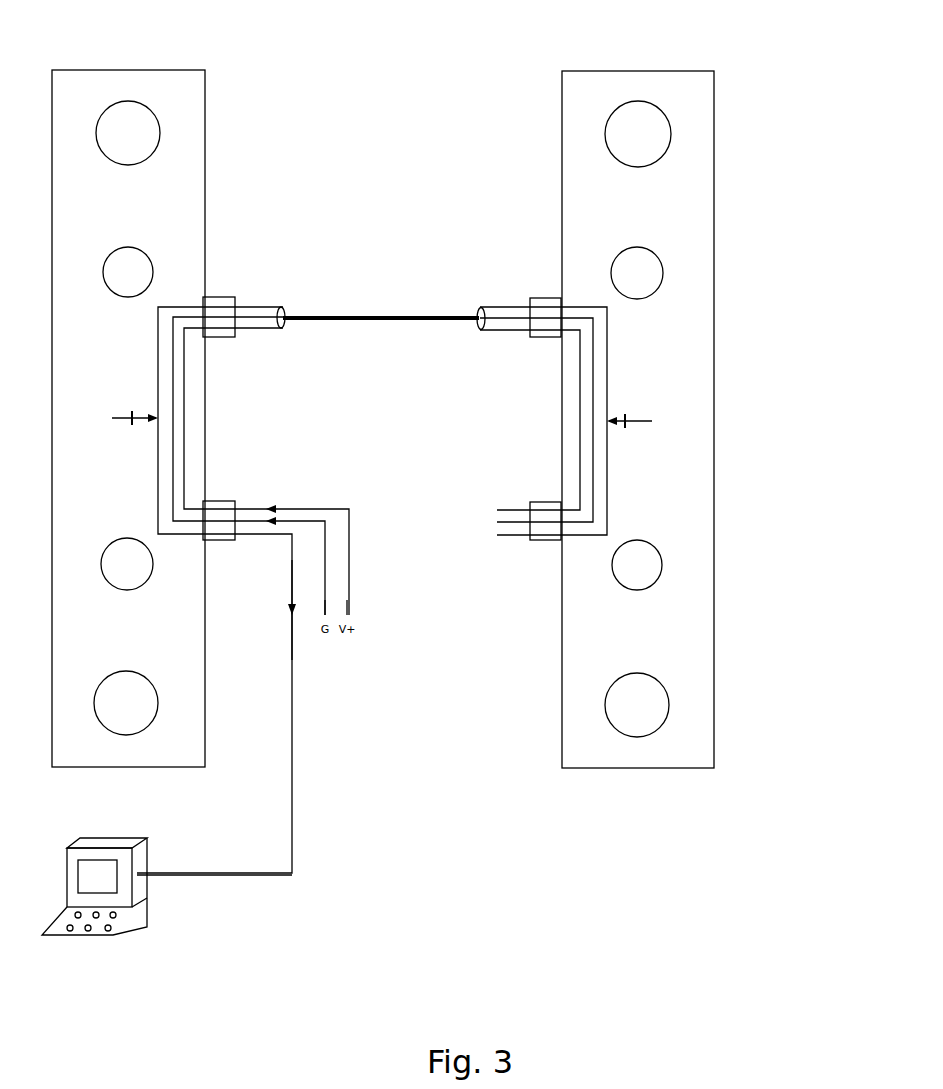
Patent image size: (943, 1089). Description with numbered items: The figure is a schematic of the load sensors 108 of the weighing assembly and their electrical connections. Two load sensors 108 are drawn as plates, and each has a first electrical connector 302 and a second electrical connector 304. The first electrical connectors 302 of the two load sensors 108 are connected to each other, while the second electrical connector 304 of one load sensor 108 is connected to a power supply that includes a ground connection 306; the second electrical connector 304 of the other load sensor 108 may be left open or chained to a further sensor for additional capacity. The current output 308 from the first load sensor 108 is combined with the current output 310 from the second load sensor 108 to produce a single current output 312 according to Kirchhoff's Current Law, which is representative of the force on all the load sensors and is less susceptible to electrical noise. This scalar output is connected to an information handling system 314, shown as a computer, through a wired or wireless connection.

The load sensor 108 is at (178, 97).
The first electrical connector 302 is at (255, 315).
The second electrical connector 304 is at (223, 507).
The ground connection 306 is at (325, 633).
The current output 308 is at (123, 418).
The current output 310 is at (638, 418).
The single current output 312 is at (292, 582).
The information handling system 314 is at (140, 917).